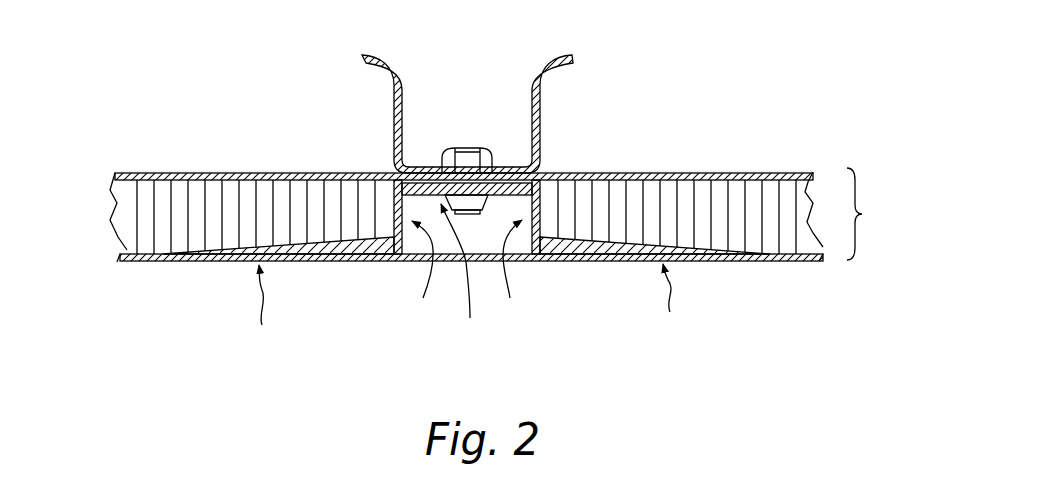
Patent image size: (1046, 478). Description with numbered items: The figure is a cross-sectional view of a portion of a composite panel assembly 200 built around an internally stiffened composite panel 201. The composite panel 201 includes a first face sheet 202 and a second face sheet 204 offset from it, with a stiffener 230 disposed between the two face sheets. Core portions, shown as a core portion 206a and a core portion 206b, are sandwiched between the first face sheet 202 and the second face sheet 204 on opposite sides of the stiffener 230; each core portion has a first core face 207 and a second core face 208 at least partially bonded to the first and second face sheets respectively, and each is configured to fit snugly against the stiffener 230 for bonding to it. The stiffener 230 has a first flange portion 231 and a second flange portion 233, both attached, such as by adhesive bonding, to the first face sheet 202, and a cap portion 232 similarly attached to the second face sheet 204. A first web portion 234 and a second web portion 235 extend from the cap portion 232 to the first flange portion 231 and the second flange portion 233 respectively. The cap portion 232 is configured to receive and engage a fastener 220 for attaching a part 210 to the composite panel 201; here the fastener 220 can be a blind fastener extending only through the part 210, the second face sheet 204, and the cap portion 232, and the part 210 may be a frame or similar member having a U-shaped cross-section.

The composite panel assembly 200 is at (676, 42).
The internally stiffened composite panel 201 is at (880, 206).
The first face sheet 202 is at (141, 262).
The second face sheet 204 is at (199, 172).
The core portion 206a is at (132, 222).
The core portion 206b is at (738, 198).
The first core face 207 is at (127, 261).
The second core face 208 is at (147, 176).
The part 210 is at (395, 120).
The fastener 220 is at (470, 147).
The stiffener 230 is at (358, 262).
The first flange portion 231 is at (260, 311).
The cap portion 232 is at (460, 277).
The second flange portion 233 is at (668, 303).
The first web portion 234 is at (424, 276).
The second web portion 235 is at (504, 275).